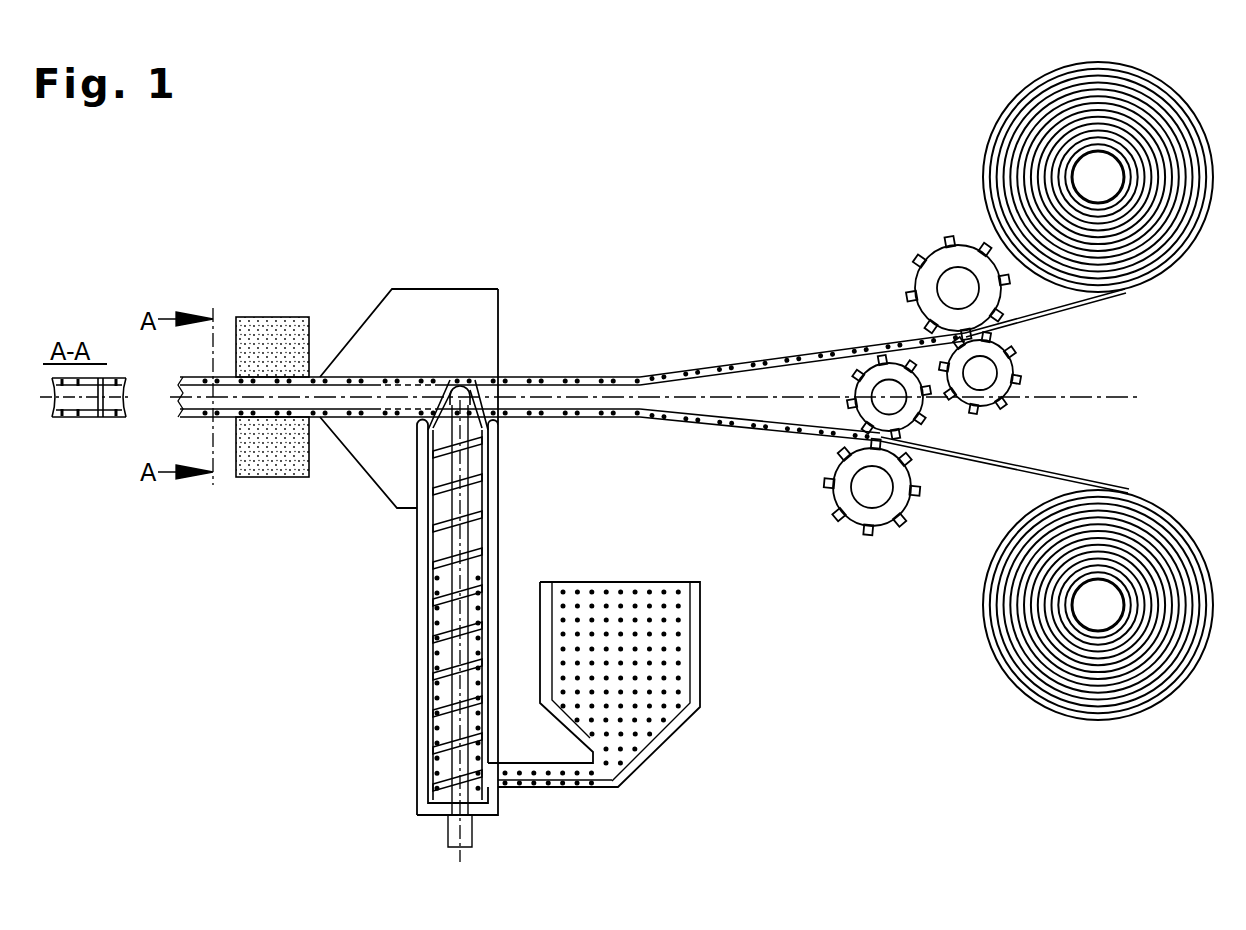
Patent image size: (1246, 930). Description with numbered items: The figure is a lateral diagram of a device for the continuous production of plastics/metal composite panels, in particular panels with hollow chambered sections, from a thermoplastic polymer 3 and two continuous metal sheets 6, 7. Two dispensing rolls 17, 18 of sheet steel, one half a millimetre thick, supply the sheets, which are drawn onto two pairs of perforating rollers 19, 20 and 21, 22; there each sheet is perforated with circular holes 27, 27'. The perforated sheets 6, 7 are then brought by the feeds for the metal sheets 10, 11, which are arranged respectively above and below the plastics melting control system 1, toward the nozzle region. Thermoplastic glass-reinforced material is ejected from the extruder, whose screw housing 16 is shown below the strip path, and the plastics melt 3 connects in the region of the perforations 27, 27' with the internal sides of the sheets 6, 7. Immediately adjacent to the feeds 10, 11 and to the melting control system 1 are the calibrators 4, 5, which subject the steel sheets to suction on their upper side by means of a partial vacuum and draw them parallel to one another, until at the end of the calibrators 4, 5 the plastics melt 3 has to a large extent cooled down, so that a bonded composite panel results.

The plastics melting control system 1 is at (407, 392).
The thermoplastic polymer 3 is at (667, 724).
The calibrator 4 is at (268, 330).
The calibrator 5 is at (275, 457).
The continuous metal sheet 6 is at (1100, 300).
The continuous metal sheet 7 is at (1097, 480).
The feed for the metal sheet 10 is at (398, 312).
The feed for the metal sheet 11 is at (375, 448).
The screw extruder housing 16 is at (492, 522).
The dispensing roll 17 is at (1013, 118).
The dispensing roll 18 is at (1027, 667).
The perforating roller 19 is at (943, 272).
The perforating roller 20 is at (1020, 358).
The perforating roller 21 is at (893, 498).
The perforating roller 22 is at (910, 407).
The circular hole 27 is at (784, 348).
The circular hole 27' is at (743, 444).